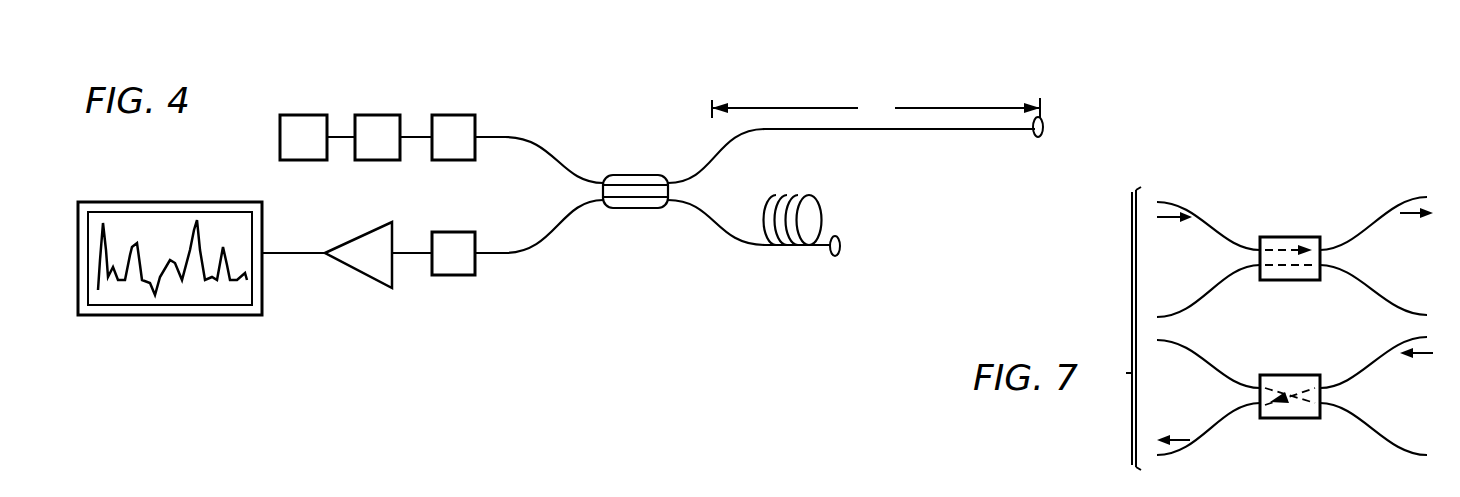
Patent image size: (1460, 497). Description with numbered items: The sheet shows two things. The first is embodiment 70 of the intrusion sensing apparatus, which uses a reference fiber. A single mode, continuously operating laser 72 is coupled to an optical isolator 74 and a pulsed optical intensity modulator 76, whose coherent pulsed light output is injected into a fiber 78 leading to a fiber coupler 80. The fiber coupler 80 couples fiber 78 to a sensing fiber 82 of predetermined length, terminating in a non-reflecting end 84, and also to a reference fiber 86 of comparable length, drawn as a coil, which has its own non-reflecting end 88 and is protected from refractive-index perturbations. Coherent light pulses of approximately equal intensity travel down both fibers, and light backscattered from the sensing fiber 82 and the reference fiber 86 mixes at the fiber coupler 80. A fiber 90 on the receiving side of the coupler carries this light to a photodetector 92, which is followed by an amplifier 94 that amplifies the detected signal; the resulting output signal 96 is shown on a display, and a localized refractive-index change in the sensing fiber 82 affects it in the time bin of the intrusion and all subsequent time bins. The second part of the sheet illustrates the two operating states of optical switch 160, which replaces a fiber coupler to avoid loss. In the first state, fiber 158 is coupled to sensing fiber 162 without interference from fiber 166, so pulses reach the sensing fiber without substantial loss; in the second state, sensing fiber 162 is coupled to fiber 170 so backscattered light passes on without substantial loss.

In FIG. 4, the embodiment 70 is at (658, 62).
In FIG. 4, the laser 72 is at (302, 115).
In FIG. 4, the optical isolator 74 is at (378, 115).
In FIG. 4, the pulsed optical intensity modulator 76 is at (452, 115).
In FIG. 4, the fiber 78 is at (494, 132).
In FIG. 4, the fiber coupler 80 is at (636, 175).
In FIG. 4, the sensing fiber 82 is at (760, 131).
In FIG. 4, the non-reflecting end 84 is at (1044, 125).
In FIG. 4, the reference fiber 86 is at (822, 218).
In FIG. 4, the non-reflecting end 88 is at (841, 248).
In FIG. 4, the fiber 90 is at (496, 257).
In FIG. 4, the photodetector 92 is at (449, 276).
In FIG. 4, the amplifier 94 is at (347, 240).
In FIG. 4, the output signal 96 is at (147, 202).
In FIG. 7, the fiber 158 is at (1207, 212).
In FIG. 7, the optical switch 160 is at (1292, 237).
In FIG. 7, the sensing fiber 162 is at (1385, 212).
In FIG. 7, the fiber 166 is at (1370, 290).
In FIG. 7, the fiber 170 is at (1215, 290).